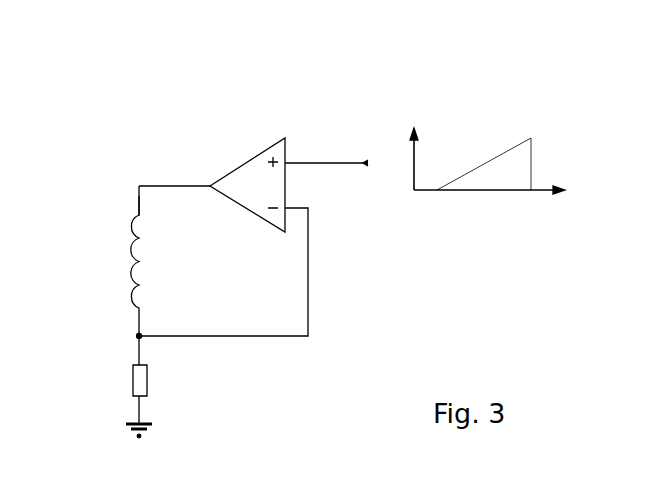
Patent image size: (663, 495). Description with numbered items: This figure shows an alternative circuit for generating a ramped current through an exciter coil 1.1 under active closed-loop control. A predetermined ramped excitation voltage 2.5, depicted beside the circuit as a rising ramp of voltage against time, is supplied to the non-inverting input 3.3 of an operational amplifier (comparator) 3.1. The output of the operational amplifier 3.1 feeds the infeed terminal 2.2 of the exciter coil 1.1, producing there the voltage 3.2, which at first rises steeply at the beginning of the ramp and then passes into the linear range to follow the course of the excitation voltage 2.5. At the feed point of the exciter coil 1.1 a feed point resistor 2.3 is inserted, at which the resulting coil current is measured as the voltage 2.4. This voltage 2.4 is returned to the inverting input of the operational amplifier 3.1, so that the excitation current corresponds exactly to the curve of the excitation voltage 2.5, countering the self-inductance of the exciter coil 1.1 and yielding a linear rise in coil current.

The exciter coil 1.1 is at (122, 262).
The infeed terminal 2.2 is at (133, 200).
The feed point resistor 2.3 is at (123, 378).
The voltage produced at the feed point resistor 2.4 is at (185, 331).
The excitation voltage 2.5 is at (502, 168).
The operational amplifier (comparator) 3.1 is at (243, 177).
The voltage at the infeed terminal 3.2 is at (180, 180).
The non-inverting input 3.3 is at (325, 160).